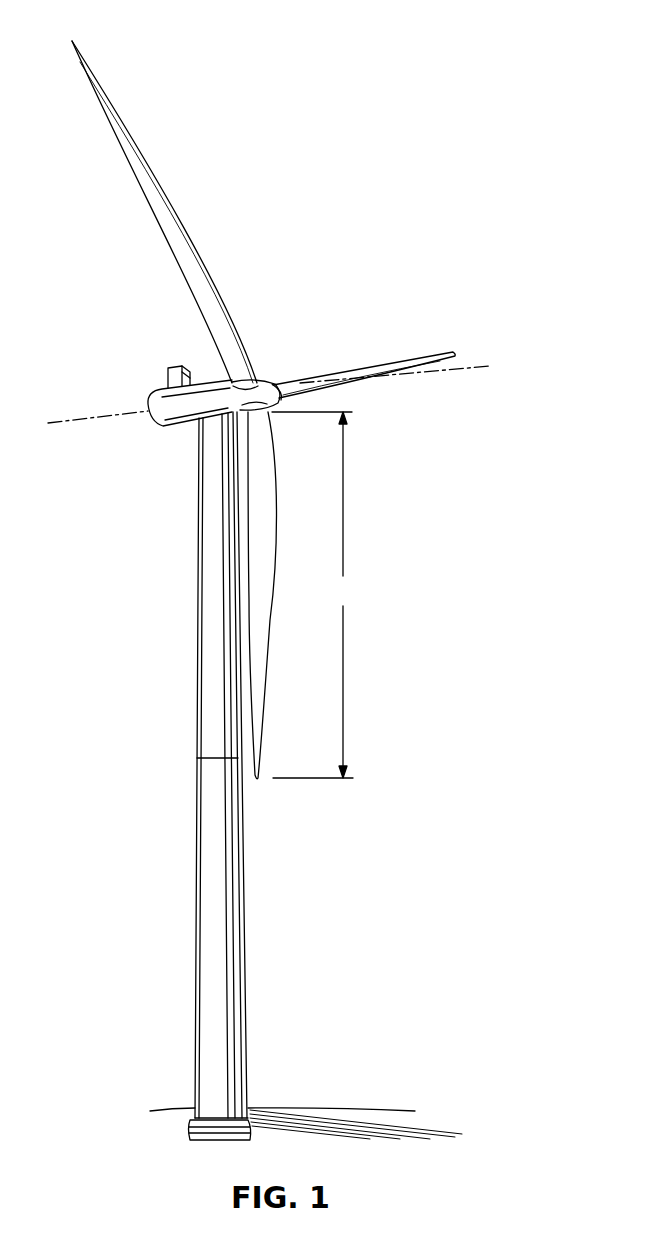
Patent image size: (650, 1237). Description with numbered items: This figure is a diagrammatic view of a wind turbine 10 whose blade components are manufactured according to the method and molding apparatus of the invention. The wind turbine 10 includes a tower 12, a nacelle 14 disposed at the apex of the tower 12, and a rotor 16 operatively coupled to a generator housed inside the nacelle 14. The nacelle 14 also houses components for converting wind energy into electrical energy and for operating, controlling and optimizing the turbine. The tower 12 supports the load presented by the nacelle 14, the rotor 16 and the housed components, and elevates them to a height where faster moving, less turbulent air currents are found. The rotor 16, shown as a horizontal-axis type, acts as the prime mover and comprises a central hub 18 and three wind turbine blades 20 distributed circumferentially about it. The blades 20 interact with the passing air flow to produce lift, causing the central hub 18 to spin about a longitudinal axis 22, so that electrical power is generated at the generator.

The wind turbine 10 is at (380, 235).
The tower 12 is at (198, 646).
The nacelle 14 is at (156, 390).
The rotor 16 is at (278, 405).
The central hub 18 is at (262, 379).
The wind turbine blade 20 is at (111, 124).
The longitudinal axis 22 is at (103, 416).